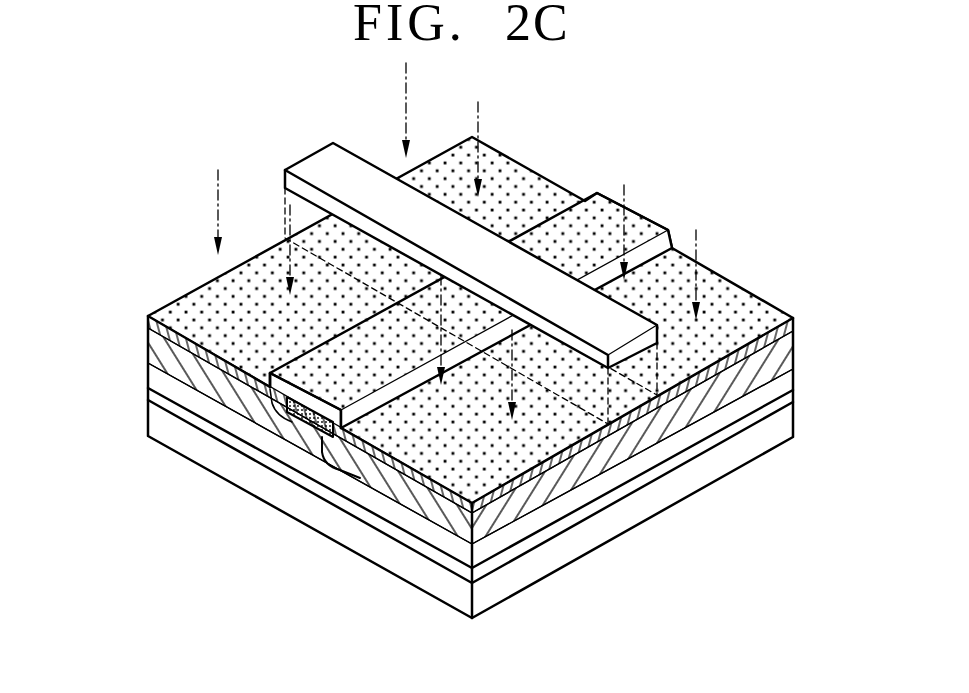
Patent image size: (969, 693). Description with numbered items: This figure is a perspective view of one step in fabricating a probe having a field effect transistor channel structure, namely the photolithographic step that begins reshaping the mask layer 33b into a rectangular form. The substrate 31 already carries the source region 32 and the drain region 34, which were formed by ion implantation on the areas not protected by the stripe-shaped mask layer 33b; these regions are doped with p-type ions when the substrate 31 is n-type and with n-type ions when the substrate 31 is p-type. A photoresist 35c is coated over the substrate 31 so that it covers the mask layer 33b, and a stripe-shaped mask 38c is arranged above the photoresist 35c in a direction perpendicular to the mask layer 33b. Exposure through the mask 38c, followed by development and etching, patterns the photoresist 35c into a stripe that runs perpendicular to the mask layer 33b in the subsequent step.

The substrate 31 is at (800, 335).
The source region 32 is at (148, 348).
The mask layer 33b is at (295, 440).
The drain region 34 is at (457, 520).
The photoresist 35c is at (148, 323).
The stripe-shaped mask 38c is at (313, 160).